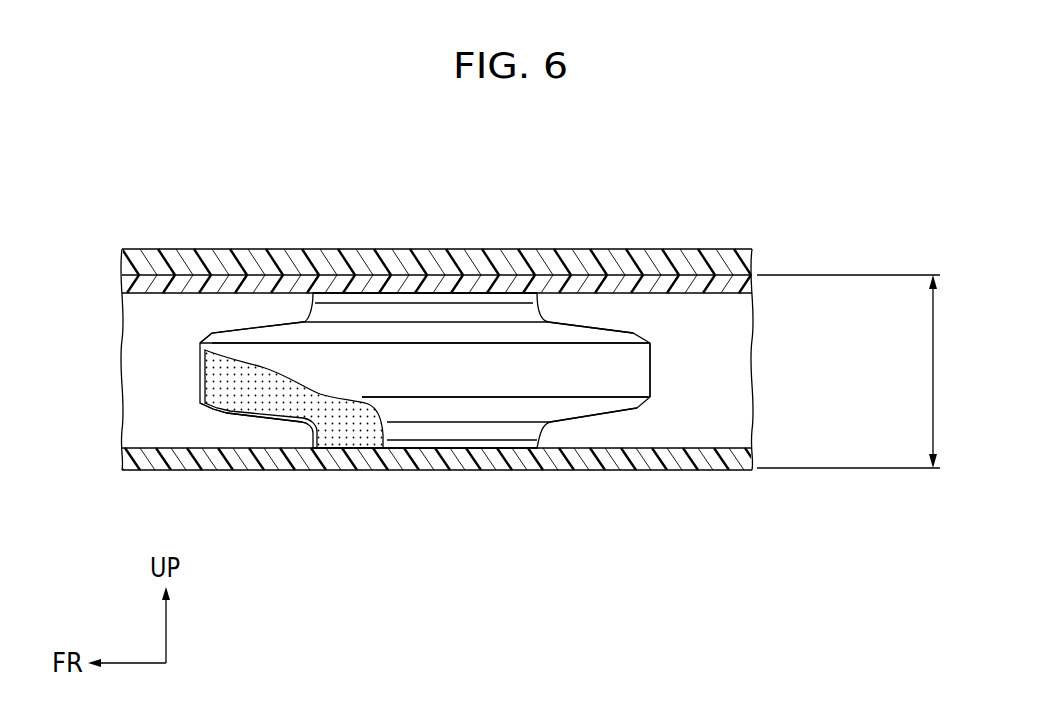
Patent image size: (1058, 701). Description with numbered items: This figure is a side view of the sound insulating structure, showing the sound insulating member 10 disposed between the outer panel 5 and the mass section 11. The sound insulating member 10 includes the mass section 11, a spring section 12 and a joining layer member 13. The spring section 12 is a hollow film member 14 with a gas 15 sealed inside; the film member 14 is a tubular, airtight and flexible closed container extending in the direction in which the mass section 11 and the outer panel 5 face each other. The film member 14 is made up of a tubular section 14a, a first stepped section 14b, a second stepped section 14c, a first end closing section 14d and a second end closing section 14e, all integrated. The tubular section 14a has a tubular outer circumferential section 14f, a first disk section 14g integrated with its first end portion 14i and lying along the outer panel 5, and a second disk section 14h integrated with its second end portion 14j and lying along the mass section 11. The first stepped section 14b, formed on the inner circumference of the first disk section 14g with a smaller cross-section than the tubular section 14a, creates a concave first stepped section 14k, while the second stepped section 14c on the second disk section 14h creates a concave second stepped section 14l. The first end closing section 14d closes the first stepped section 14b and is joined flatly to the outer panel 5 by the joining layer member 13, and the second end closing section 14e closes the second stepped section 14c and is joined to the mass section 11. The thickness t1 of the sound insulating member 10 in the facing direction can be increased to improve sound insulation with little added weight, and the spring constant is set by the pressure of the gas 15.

The outer panel 5 is at (436, 212).
The sound insulating member 10 is at (285, 273).
The spring section 12 is at (247, 305).
The joining layer member 13 is at (712, 273).
The mass section 11 is at (212, 470).
The film member 14 is at (470, 354).
The tubular section 14a is at (825, 313).
The first stepped section 14b is at (537, 308).
The second stepped section 14c is at (512, 440).
The first end closing section 14d is at (458, 303).
The second end closing section 14e is at (470, 448).
The tubular outer circumferential section 14f is at (643, 375).
The first disk section 14g is at (610, 330).
The second disk section 14h is at (593, 412).
The first end portion 14i is at (203, 340).
The second end portion 14j is at (200, 392).
The first stepped section 14k is at (547, 318).
The second stepped section 14l is at (593, 410).
The gas 15 is at (345, 437).
The thickness t1 is at (863, 371).